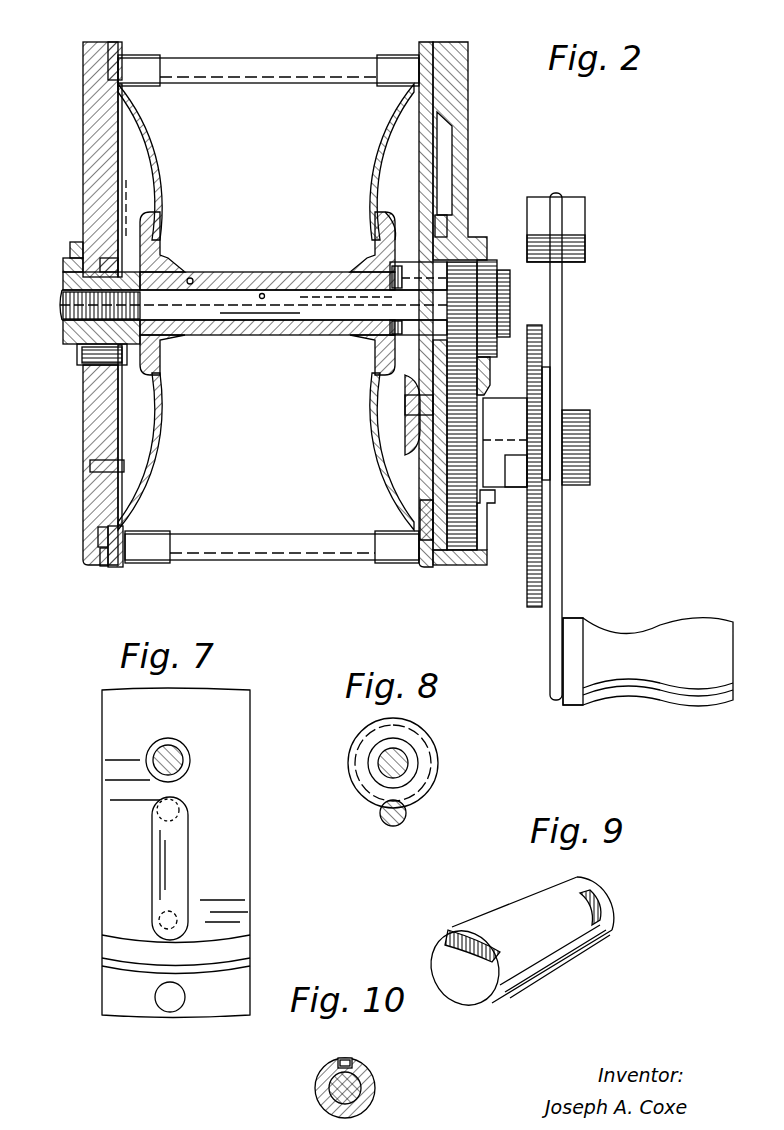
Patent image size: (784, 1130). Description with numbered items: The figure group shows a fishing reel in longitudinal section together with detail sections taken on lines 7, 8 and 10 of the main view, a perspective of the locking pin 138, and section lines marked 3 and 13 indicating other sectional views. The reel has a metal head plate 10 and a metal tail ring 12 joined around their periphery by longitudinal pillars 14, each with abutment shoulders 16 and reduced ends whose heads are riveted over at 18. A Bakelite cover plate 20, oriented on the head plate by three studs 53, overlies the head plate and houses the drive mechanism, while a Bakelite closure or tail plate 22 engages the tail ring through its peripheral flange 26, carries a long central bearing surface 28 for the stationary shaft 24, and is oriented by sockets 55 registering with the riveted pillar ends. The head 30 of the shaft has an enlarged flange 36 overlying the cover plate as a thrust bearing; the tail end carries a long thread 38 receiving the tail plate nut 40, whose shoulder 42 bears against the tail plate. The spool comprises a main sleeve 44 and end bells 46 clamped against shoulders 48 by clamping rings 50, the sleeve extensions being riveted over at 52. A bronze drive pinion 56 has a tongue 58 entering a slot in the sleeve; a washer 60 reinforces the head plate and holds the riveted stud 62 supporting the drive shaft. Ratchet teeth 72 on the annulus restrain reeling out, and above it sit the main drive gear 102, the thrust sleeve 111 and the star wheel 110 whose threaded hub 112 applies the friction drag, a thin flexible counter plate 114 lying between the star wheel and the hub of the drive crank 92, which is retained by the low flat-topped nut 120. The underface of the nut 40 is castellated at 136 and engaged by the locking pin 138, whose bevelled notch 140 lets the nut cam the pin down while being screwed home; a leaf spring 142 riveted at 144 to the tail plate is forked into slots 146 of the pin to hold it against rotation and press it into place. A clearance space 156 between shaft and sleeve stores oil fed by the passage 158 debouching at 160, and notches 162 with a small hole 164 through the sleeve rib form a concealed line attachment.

In FIG. 2, the section line 3- 3 is at (456, 22).
In FIG. 2, the section line 7— 7 is at (126, 240).
In FIG. 2, the section line 8— 8 is at (80, 262).
In FIG. 2, the head plate 10 is at (425, 143).
In FIG. 2, the tail ring 12 is at (112, 42).
In FIG. 2, the section line 13- 13 is at (492, 235).
In FIG. 2, the longitudinal pillars 14 is at (268, 60).
In FIG. 2, the abutment shoulders 16 is at (125, 540).
In FIG. 2, the riveted heads 18 is at (104, 568).
In FIG. 2, the cover plate 20 is at (455, 88).
In FIG. 2, the closure plate 22 is at (100, 108).
In FIG. 7, the closure plate 22 is at (230, 720).
In FIG. 2, the stationary shaft 24 is at (232, 302).
In FIG. 7, the stationary shaft 24 is at (183, 760).
In FIG. 8, the stationary shaft 24 is at (385, 768).
In FIG. 10, the stationary shaft 24 is at (372, 1094).
In FIG. 2, the peripheral flange 26 is at (122, 62).
In FIG. 2, the central bearing surface 28 is at (103, 255).
In FIG. 2, the head of the shaft 30 is at (510, 300).
In FIG. 2, the enlarged flange 36 is at (488, 258).
In FIG. 2, the thread 38 is at (66, 300).
In FIG. 2, the tail plate nut 40 is at (75, 326).
In FIG. 7, the tail plate nut 40 is at (160, 748).
In FIG. 2, the shoulder 42 is at (63, 264).
In FIG. 2, the main sleeve 44 is at (262, 330).
In FIG. 10, the main sleeve 44 is at (318, 1095).
In FIG. 2, the end flanges 46 is at (152, 446).
In FIG. 2, the shoulders 48 is at (160, 250).
In FIG. 2, the clamping rings 50 is at (390, 222).
In FIG. 2, the riveted-over portion 52 is at (162, 350).
In FIG. 2, the studs 53 is at (460, 205).
In FIG. 2, the sockets 55 is at (98, 532).
In FIG. 7, the sockets 55 is at (174, 1003).
In FIG. 2, the drive pinion 56 is at (418, 276).
In FIG. 2, the tongue 58 is at (418, 314).
In FIG. 2, the washer 60 is at (410, 420).
In FIG. 2, the stud 62 is at (418, 410).
In FIG. 2, the ratchet teeth 72 is at (428, 520).
In FIG. 2, the drive crank 92 is at (553, 316).
In FIG. 2, the main drive gear 102 is at (466, 565).
In FIG. 2, the star wheel 110 is at (530, 544).
In FIG. 2, the thrust sleeve 111 is at (507, 442).
In FIG. 2, the threaded hub 112 is at (516, 470).
In FIG. 2, the flexible plate 114 is at (548, 392).
In FIG. 2, the nut 120 is at (575, 485).
In FIG. 2, the castellations 136 is at (72, 250).
In FIG. 8, the castellations 136 is at (425, 745).
In FIG. 2, the locking pin 138 is at (82, 360).
In FIG. 8, the locking pin 138 is at (400, 824).
In FIG. 9, the locking pin 138 is at (540, 968).
In FIG. 9, the bevelled notch 140 is at (456, 932).
In FIG. 2, the leaf spring 142 is at (124, 412).
In FIG. 7, the leaf spring 142 is at (172, 848).
In FIG. 2, the rivet 144 is at (126, 468).
In FIG. 7, the rivet 144 is at (178, 922).
In FIG. 9, the slots 146 is at (565, 885).
In FIG. 2, the clearance space 156 is at (320, 292).
In FIG. 2, the oil feed passage 158 is at (300, 325).
In FIG. 2, the debouching point 160 is at (262, 292).
In FIG. 10, the notches 162 is at (355, 1062).
In FIG. 2, the hole 164 is at (191, 278).
In FIG. 10, the hole 164 is at (340, 1062).